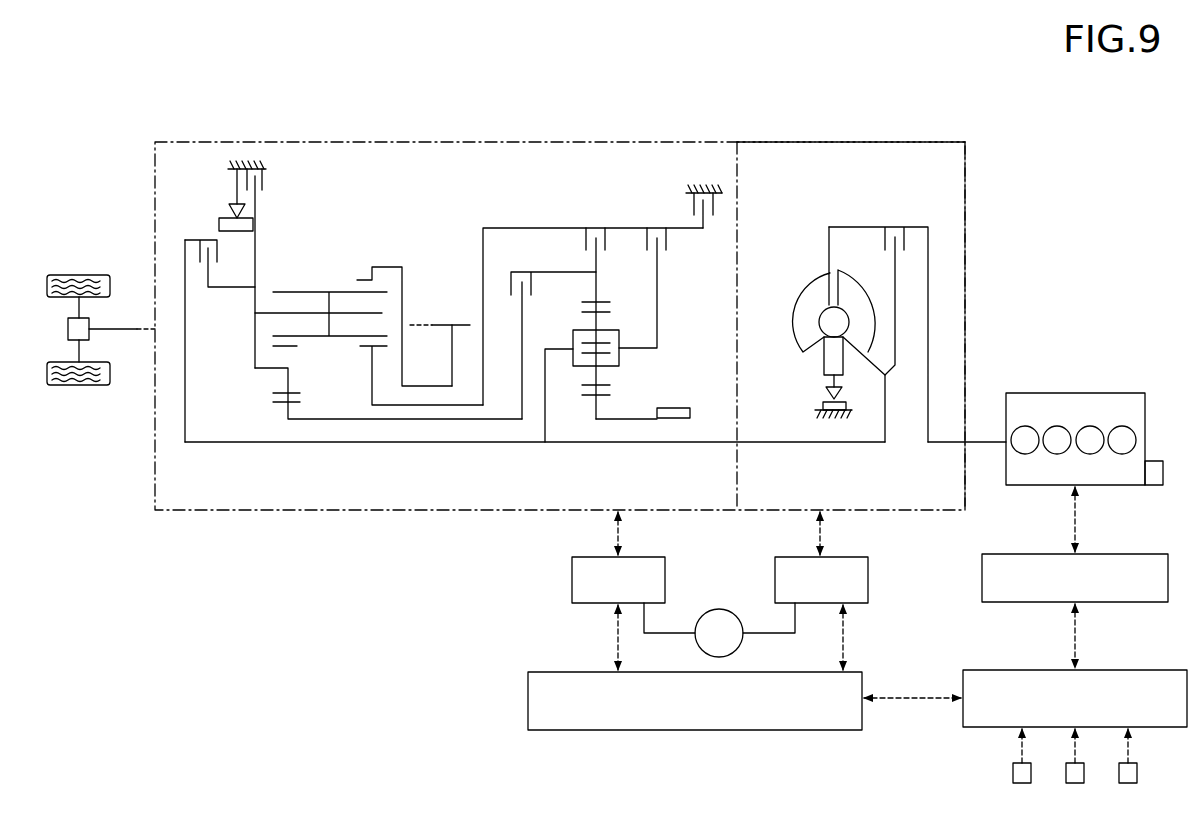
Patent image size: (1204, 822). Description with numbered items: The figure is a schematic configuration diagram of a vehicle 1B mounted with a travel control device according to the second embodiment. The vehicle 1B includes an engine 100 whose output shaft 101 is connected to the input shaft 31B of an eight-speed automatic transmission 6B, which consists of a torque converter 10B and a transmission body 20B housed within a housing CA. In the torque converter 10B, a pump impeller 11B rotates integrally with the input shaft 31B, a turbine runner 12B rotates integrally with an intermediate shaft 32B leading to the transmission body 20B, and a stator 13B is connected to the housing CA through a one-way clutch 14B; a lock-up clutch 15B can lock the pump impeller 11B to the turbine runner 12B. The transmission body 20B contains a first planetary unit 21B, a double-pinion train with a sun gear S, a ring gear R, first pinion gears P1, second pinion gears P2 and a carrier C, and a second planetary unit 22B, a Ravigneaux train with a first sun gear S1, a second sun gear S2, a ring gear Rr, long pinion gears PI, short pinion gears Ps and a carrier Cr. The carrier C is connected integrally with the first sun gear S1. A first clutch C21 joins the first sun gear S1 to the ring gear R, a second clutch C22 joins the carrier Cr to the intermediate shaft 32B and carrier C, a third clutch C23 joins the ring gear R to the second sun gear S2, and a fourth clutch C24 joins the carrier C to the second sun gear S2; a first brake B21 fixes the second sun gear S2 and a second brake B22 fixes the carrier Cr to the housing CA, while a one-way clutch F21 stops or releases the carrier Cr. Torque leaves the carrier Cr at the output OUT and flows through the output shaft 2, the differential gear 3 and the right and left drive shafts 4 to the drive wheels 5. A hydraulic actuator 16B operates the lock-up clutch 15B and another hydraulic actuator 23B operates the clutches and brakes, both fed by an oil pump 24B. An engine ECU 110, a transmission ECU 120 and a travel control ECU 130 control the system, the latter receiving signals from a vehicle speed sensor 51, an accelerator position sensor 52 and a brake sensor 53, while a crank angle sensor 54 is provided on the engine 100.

The vehicle 1B is at (862, 98).
The automatic transmission 6B is at (238, 103).
The torque converter 10B is at (948, 140).
The transmission body 20B is at (693, 138).
The pump impeller 11B is at (803, 285).
The turbine runner 12B is at (865, 285).
The stator 13B is at (823, 359).
The one-way clutch 14B is at (822, 405).
The lock-up clutch 15B is at (885, 204).
The hydraulic actuator 16B is at (849, 557).
The first planetary unit 21B is at (608, 458).
The second planetary unit 22B is at (346, 458).
The hydraulic actuator 23B is at (645, 557).
The oil pump 24B is at (720, 609).
The input shaft 31B is at (935, 445).
The intermediate shaft 32B is at (662, 448).
The one-way clutch F21 is at (229, 182).
The first brake B21 is at (690, 256).
The second brake B22 is at (276, 188).
The first clutch C21 is at (512, 248).
The second clutch C22 is at (201, 218).
The third clutch C23 is at (587, 208).
The fourth clutch C24 is at (649, 208).
The housing CA is at (268, 166).
The long pinion gears PI is at (316, 290).
The ring gear Rr is at (357, 280).
The carrier Cr is at (255, 355).
The first sun gear S1 is at (278, 403).
The second sun gear S2 is at (360, 347).
The short pinion gears Ps is at (290, 380).
The ring gear R is at (607, 298).
The carrier C is at (629, 347).
The first pinion gears P1 is at (590, 318).
The second pinion gears P2 is at (600, 373).
The sun gear S is at (590, 398).
The output shaft OUT is at (448, 311).
The output shaft 2 is at (123, 333).
The differential gear 3 is at (68, 328).
The drive shafts 4 is at (82, 302).
The drive wheels 5 is at (78, 275).
The engine 100 is at (1119, 392).
The output shaft 101 is at (980, 438).
The crank angle sensor 54 is at (1155, 461).
The engine ECU 110 is at (1145, 554).
The transmission ECU 120 is at (830, 730).
The travel control ECU 130 is at (1157, 670).
The vehicle speed sensor 51 is at (1137, 773).
The accelerator position sensor 52 is at (1084, 766).
The brake sensor 53 is at (1013, 773).